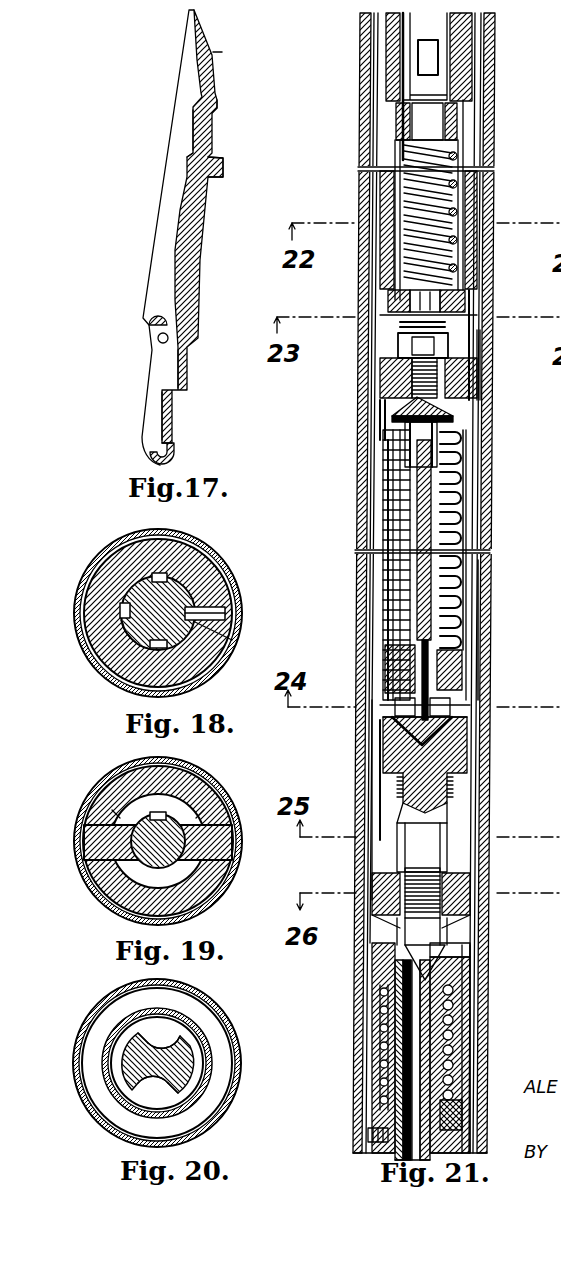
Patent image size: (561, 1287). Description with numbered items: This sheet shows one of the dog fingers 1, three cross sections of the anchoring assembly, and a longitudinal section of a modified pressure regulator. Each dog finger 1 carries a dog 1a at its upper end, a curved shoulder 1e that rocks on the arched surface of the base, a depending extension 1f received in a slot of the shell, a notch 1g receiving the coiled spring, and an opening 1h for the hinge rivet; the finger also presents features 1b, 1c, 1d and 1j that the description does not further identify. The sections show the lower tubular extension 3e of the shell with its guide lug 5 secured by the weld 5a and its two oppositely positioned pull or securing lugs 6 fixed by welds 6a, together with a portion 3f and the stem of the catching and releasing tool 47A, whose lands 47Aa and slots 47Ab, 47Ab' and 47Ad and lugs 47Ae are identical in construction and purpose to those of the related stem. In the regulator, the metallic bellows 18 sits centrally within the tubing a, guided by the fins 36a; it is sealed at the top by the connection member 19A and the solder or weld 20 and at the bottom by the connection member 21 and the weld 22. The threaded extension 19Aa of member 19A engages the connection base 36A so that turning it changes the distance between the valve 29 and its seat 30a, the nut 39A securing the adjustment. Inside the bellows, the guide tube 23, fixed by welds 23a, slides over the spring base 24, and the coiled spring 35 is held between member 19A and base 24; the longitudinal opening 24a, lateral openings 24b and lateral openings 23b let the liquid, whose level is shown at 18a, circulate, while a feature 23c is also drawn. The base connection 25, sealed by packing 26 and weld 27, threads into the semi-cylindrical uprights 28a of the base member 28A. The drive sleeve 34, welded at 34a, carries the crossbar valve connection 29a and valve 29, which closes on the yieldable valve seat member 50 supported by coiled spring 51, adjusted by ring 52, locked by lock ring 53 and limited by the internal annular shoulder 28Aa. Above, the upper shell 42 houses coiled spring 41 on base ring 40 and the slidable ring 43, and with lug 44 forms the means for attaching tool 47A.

In FIG. 17, the dog finger 1 is at (198, 236).
In FIG. 17, the dog 1a is at (224, 170).
In FIG. 17, the notch of pawl 1b is at (193, 157).
In FIG. 17, the shoulder of pawl 1c is at (214, 116).
In FIG. 17, the upper end of pawl 1d is at (222, 52).
In FIG. 17, the curved shoulder 1e is at (149, 322).
In FIG. 17, the depending extension 1f is at (178, 367).
In FIG. 17, the notch 1g is at (172, 413).
In FIG. 17, the opening 1h is at (160, 343).
In FIG. 17, the body of pawl 1j is at (193, 128).
In FIG. 18, the lower tubular extension 3e is at (200, 570).
In FIG. 19, the lower tubular extension 3e is at (110, 903).
In FIG. 20, the ring portion 3f is at (118, 1105).
In FIG. 18, the guide lug 5 is at (227, 612).
In FIG. 18, the weld 5a is at (233, 630).
In FIG. 19, the pull or securing lug 6 is at (232, 868).
In FIG. 19, the weld 6a is at (97, 810).
In FIG. 18, the catching and releasing tool 47A is at (125, 580).
In FIG. 19, the catching and releasing tool 47A is at (178, 828).
In FIG. 20, the catching and releasing tool 47A is at (172, 1063).
In FIG. 18, the land 47Aa is at (120, 670).
In FIG. 18, the slot 47Ab is at (100, 619).
In FIG. 19, the slot 47Ab' is at (220, 783).
In FIG. 20, the slot 47Ad is at (172, 1090).
In FIG. 20, the lug 47Ae is at (185, 1040).
In FIG. 18, the tubing a is at (243, 583).
In FIG. 19, the tubing a is at (118, 776).
In FIG. 20, the tubing a is at (213, 998).
In FIG. 21, the tubing a is at (495, 40).
In FIG. 21, the metallic bellows 18 is at (468, 466).
In FIG. 21, the top of the liquid 18a is at (383, 500).
In FIG. 21, the connection member 19A is at (380, 415).
In FIG. 21, the threaded extension 19Aa is at (390, 391).
In FIG. 21, the solder or weld 20 is at (455, 405).
In FIG. 21, the connection member 21 is at (470, 705).
In FIG. 21, the solder or weld 22 is at (478, 658).
In FIG. 21, the guide tube 23 is at (383, 534).
In FIG. 21, the weld 23a is at (455, 439).
In FIG. 21, the lateral opening 23b is at (455, 624).
In FIG. 21, the ring 23c is at (390, 700).
In FIG. 21, the spring base 24 is at (458, 680).
In FIG. 21, the longitudinal opening 24a is at (383, 642).
In FIG. 21, the lateral opening 24b is at (370, 725).
In FIG. 21, the base connection 25 is at (450, 760).
In FIG. 21, the packing 26 is at (458, 740).
In FIG. 21, the weld 27 is at (358, 770).
In FIG. 21, the base member 28A is at (395, 978).
In FIG. 21, the internal annular shoulder 28Aa is at (465, 952).
In FIG. 21, the semi-cylindrical upright 28a is at (455, 860).
In FIG. 21, the valve 29 is at (422, 934).
In FIG. 21, the valve connection 29a is at (380, 880).
In FIG. 21, the valve seat 30a is at (432, 972).
In FIG. 21, the drive sleeve 34 is at (470, 570).
In FIG. 21, the weld 34a is at (472, 373).
In FIG. 21, the coiled spring 35 is at (458, 527).
In FIG. 21, the connection base 36A is at (393, 370).
In FIG. 21, the fin 36a is at (478, 302).
In FIG. 21, the nut 39A is at (448, 347).
In FIG. 21, the base ring 40 is at (388, 297).
In FIG. 21, the coiled spring 41 is at (470, 188).
In FIG. 21, the upper shell 42 is at (393, 34).
In FIG. 21, the ring 43 is at (398, 120).
In FIG. 21, the lug 44 is at (420, 58).
In FIG. 21, the yieldable valve seat member 50 is at (398, 1058).
In FIG. 21, the coiled spring 51 is at (450, 1010).
In FIG. 21, the ring 52 is at (450, 1110).
In FIG. 21, the lock ring 53 is at (368, 1130).